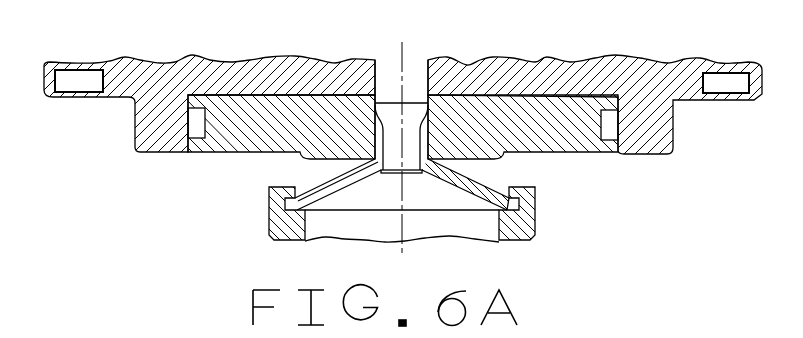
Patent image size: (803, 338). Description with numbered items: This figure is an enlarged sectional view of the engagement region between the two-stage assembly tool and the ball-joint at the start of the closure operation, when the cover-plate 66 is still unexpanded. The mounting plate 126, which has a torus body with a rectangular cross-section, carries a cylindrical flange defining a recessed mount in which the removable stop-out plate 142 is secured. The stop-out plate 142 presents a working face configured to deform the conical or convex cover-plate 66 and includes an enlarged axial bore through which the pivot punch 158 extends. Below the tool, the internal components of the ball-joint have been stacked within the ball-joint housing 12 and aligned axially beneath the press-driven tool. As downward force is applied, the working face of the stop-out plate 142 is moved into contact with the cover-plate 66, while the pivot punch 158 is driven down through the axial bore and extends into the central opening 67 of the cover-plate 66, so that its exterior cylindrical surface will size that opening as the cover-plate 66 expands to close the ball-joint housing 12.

The mounting plate 126 is at (608, 73).
The stop-out plate 142 is at (250, 138).
The pivot punch 158 is at (413, 70).
The central opening 67 is at (376, 166).
The cover-plate 66 is at (343, 190).
The ball-joint housing 12 is at (528, 222).